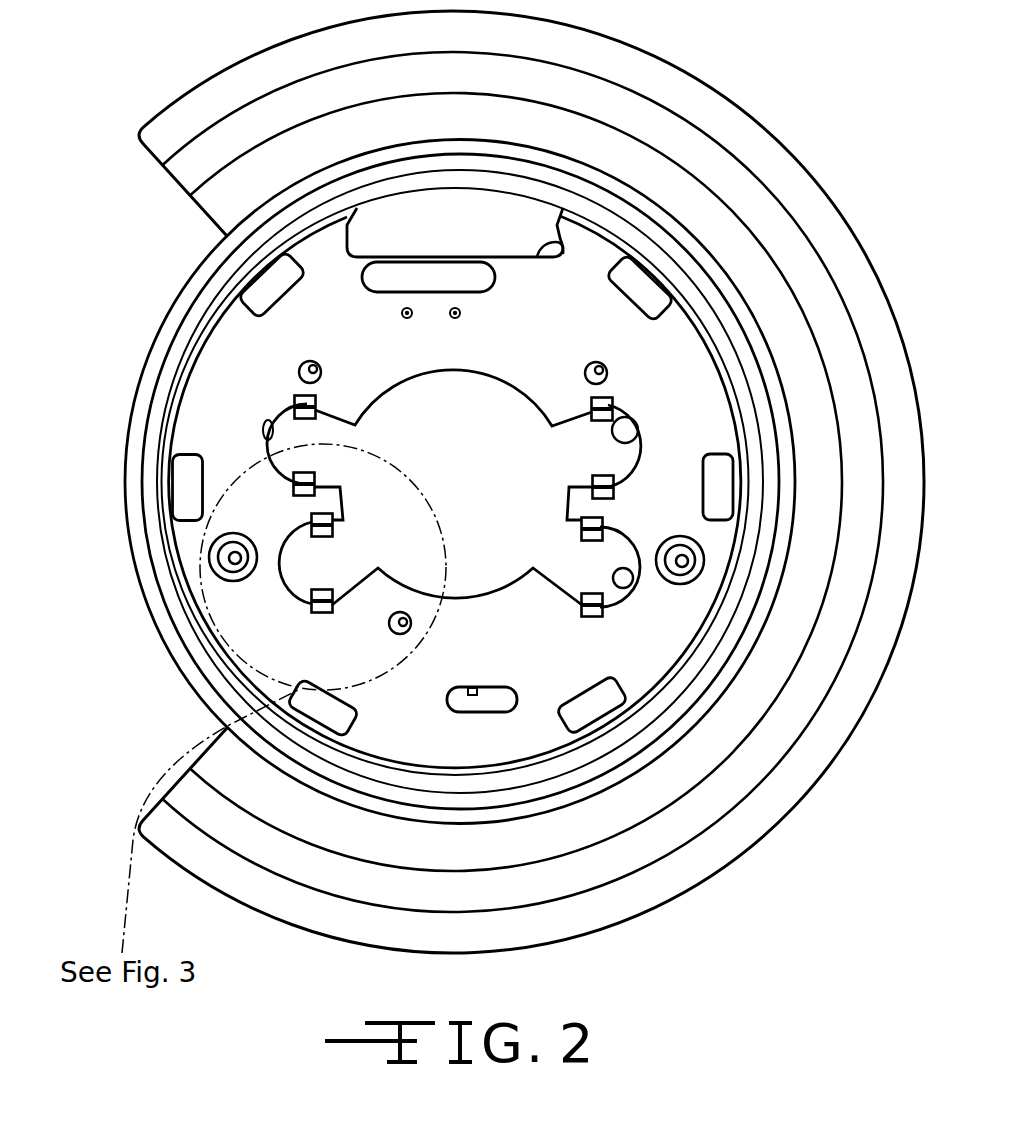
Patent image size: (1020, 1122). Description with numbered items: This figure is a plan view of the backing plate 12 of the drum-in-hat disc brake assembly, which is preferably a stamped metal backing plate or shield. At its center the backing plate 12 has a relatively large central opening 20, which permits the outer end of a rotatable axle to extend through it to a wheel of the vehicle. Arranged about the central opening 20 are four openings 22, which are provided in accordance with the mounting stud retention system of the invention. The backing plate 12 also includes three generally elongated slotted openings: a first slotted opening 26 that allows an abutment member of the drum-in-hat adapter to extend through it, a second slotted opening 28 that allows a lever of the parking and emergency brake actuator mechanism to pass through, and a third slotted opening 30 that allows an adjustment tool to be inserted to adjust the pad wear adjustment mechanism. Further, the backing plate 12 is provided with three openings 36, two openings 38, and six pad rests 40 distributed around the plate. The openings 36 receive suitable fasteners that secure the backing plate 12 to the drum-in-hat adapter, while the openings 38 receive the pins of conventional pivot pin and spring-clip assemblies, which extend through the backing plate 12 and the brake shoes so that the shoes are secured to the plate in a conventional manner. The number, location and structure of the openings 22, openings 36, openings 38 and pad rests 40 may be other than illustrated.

The backing plate 12 is at (720, 86).
The central opening 20 is at (402, 388).
The openings 22 is at (268, 416).
The first slotted opening 26 is at (565, 246).
The second slotted opening 28 is at (494, 279).
The third slotted opening 30 is at (477, 688).
The openings 36 is at (318, 364).
The openings 38 is at (243, 571).
The pad rests 40 is at (260, 292).